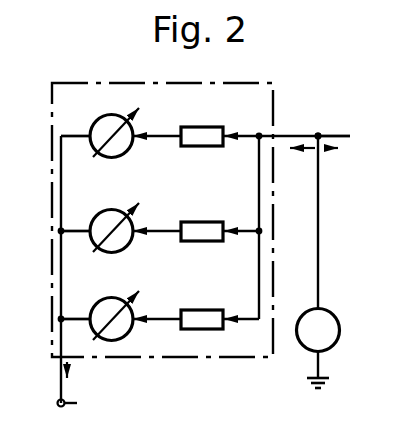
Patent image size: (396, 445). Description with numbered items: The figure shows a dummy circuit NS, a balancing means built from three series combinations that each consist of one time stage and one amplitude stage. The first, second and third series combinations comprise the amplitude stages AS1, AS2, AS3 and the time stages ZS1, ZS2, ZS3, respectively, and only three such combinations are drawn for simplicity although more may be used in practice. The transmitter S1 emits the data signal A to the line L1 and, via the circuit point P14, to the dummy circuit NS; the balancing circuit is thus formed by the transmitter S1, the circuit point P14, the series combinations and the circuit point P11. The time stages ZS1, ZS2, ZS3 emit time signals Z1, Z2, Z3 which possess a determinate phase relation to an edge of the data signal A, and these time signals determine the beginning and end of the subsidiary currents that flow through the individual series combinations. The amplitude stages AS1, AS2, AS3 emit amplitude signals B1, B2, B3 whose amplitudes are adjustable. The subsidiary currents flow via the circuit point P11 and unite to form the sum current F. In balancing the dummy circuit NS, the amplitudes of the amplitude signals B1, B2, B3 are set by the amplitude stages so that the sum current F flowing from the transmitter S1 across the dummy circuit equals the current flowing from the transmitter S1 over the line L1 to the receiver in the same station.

The dummy circuit NS is at (241, 359).
The amplitude signal B3 is at (75, 122).
The amplitude signal B2 is at (75, 217).
The amplitude signal B1 is at (75, 308).
The amplitude stage AS3 is at (114, 122).
The amplitude stage AS2 is at (114, 218).
The amplitude stage AS1 is at (114, 306).
The time signal Z3 is at (157, 122).
The time signal Z2 is at (157, 217).
The time signal Z1 is at (157, 308).
The time stage ZS3 is at (220, 125).
The time stage ZS2 is at (220, 217).
The time stage ZS1 is at (220, 306).
The circuit point P14 is at (307, 124).
The line L1 is at (335, 124).
The data signal A is at (314, 163).
The transmitter S1 is at (318, 349).
The sum current F is at (74, 372).
The circuit point P11 is at (81, 404).